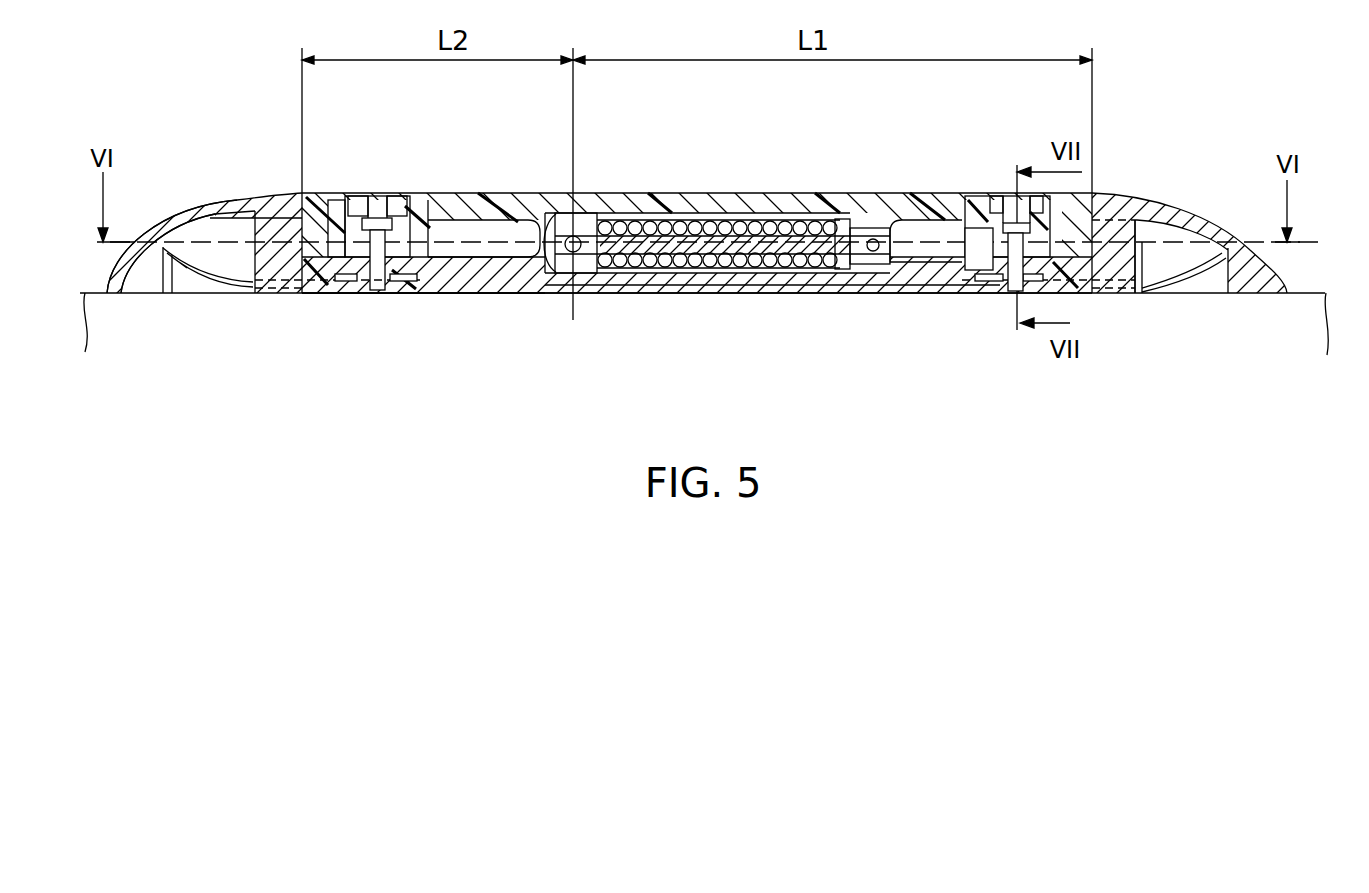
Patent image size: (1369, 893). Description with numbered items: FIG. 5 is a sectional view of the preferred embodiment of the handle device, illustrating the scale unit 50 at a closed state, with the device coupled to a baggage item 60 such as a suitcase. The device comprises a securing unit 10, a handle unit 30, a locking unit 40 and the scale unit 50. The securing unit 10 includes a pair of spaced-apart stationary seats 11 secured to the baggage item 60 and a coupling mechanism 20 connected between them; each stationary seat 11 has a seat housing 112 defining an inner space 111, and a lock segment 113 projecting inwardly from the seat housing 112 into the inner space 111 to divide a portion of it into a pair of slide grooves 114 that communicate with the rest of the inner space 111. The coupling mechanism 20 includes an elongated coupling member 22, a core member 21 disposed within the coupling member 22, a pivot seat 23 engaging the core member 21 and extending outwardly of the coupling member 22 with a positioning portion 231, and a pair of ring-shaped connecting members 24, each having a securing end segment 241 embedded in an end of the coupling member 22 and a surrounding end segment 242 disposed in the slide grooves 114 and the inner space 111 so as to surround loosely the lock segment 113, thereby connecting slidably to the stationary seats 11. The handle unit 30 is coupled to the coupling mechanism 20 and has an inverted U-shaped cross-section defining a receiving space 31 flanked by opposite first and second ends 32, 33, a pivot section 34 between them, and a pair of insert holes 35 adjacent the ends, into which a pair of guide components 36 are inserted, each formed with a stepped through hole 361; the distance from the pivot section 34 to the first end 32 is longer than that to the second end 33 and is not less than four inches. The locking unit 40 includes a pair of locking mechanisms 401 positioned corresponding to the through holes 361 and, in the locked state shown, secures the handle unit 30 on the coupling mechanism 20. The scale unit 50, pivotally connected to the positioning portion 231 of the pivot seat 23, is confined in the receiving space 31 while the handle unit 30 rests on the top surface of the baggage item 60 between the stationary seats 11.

The securing unit 10 is at (1177, 200).
The stationary seat 11 is at (1222, 225).
The inner space 111 is at (205, 215).
The seat housing 112 is at (245, 200).
The lock segment 113 is at (280, 295).
The slide groove 114 is at (278, 210).
The coupling mechanism 20 is at (923, 296).
The core member 21 is at (518, 297).
The coupling member 22 is at (467, 297).
The pivot seat 23 is at (875, 297).
The positioning portion 231 is at (866, 228).
The connecting member 24 is at (1190, 295).
The securing end segment 241 is at (985, 297).
The surrounding end segment 242 is at (1208, 297).
The handle unit 30 is at (507, 196).
The receiving space 31 is at (641, 193).
The first end 32 is at (1112, 198).
The second end 33 is at (308, 205).
The pivot section 34 is at (577, 297).
The insert hole 35 is at (960, 212).
The guide component 36 is at (978, 212).
The through hole 361 is at (993, 205).
The locking unit 40 is at (383, 168).
The locking mechanism 401 is at (338, 205).
The scale unit 50 is at (770, 218).
The baggage item 60 is at (1325, 295).